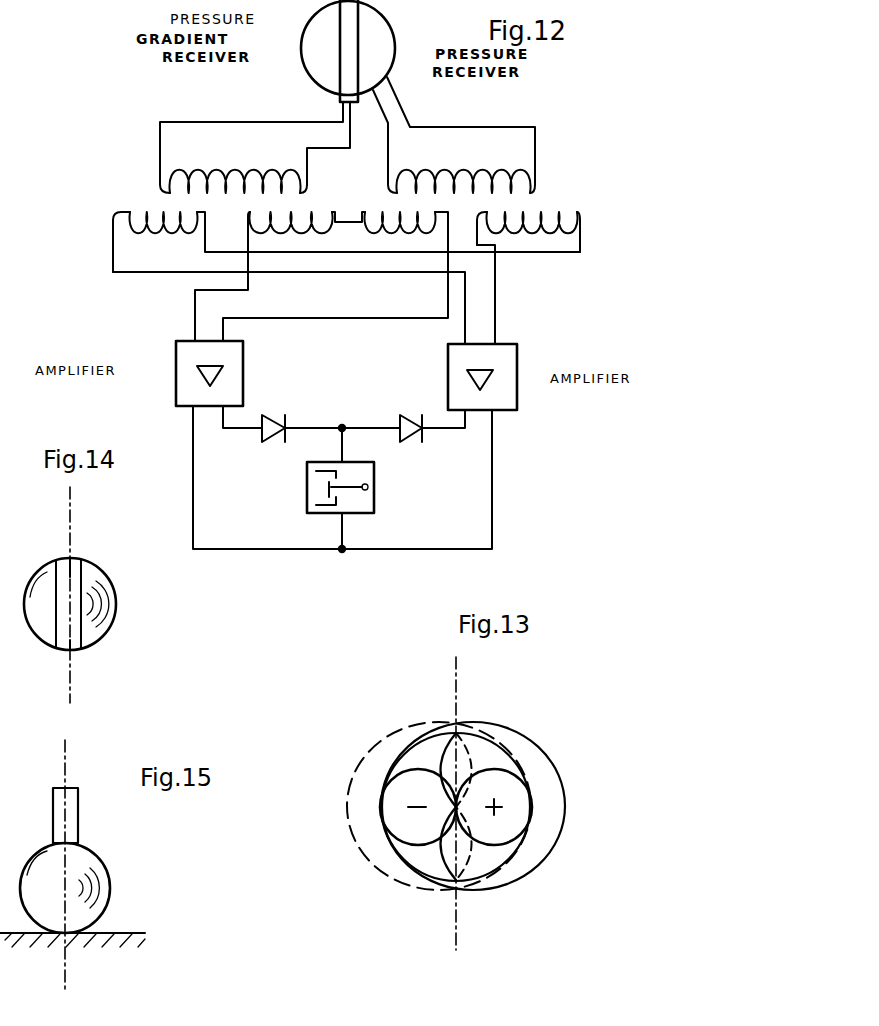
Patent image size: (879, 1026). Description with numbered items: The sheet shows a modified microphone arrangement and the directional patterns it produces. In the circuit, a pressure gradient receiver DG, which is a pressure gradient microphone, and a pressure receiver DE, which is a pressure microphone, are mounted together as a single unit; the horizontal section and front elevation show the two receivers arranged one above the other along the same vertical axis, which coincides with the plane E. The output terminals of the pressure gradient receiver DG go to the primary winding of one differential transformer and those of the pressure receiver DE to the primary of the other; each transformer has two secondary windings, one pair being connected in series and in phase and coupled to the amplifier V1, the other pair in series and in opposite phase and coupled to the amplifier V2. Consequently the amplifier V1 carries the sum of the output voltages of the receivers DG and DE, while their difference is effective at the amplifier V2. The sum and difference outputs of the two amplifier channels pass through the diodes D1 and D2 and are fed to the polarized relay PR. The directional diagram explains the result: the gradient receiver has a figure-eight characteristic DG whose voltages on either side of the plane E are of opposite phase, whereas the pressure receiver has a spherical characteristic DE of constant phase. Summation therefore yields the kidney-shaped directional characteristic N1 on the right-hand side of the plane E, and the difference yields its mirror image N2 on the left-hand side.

In FIG. 12, the pressure gradient receiver DG is at (350, 40).
In FIG. 14, the pressure gradient receiver DG is at (75, 583).
In FIG. 15, the pressure gradient receiver DG is at (75, 817).
In FIG. 13, the pressure gradient receiver DG is at (397, 818).
In FIG. 12, the pressure receiver DE is at (373, 46).
In FIG. 14, the pressure receiver DE is at (95, 598).
In FIG. 15, the pressure receiver DE is at (88, 884).
In FIG. 13, the pressure receiver DE is at (516, 753).
In FIG. 12, the amplifier V1 is at (192, 376).
In FIG. 12, the amplifier V2 is at (498, 382).
In FIG. 12, the diode D1 is at (276, 419).
In FIG. 12, the diode D2 is at (401, 419).
In FIG. 12, the polarized relay PR is at (368, 478).
In FIG. 14, the plane in space E is at (78, 690).
In FIG. 15, the plane in space E is at (80, 971).
In FIG. 13, the plane in space E is at (464, 928).
In FIG. 13, the kidney-shaped directional characteristic N1 is at (552, 758).
In FIG. 13, the mirror-image kidney-shaped directional characteristic N2 is at (370, 757).